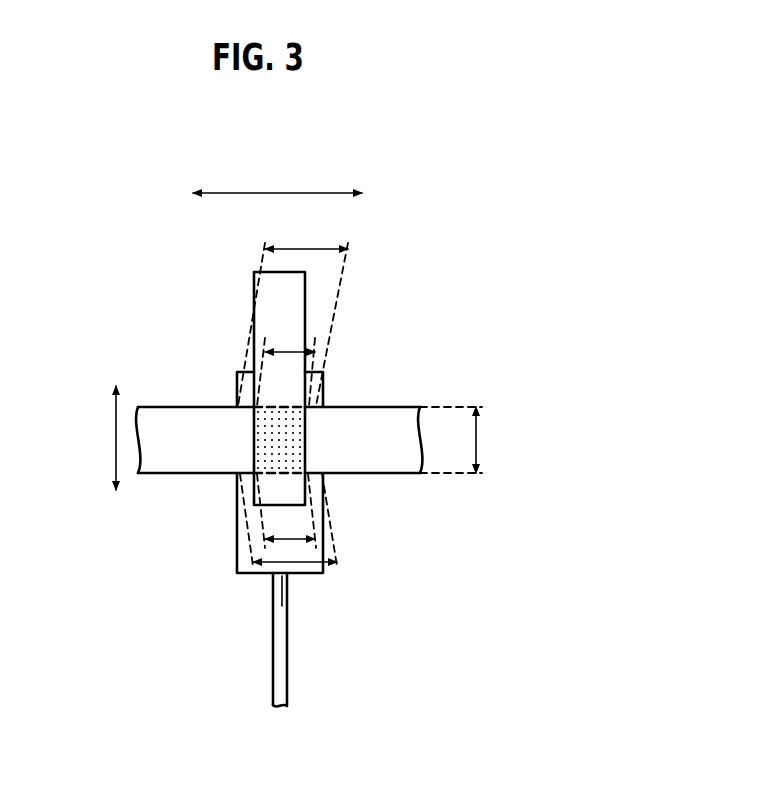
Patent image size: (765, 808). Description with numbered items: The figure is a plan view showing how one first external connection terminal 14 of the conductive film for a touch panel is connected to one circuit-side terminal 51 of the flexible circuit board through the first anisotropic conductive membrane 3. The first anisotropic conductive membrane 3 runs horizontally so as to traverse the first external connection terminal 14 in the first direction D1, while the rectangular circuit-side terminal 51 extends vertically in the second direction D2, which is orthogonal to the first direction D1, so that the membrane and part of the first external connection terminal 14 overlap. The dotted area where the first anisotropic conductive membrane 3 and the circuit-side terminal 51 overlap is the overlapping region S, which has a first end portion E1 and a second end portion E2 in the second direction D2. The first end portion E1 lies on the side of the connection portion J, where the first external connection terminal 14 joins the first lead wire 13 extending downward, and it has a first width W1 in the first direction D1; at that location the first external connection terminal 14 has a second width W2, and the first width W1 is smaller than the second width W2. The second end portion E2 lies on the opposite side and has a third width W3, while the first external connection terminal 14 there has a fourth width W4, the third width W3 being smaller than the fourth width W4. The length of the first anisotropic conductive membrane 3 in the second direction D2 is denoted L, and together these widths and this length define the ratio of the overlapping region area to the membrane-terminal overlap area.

The first anisotropic conductive membrane 3 is at (388, 406).
The circuit-side terminal 51 is at (305, 312).
The first external connection terminal 14 is at (237, 542).
The first lead wire 13 is at (273, 647).
The overlapping region S is at (285, 436).
The connection portion J is at (282, 606).
The first end portion E1 is at (273, 473).
The second end portion E2 is at (276, 407).
The first direction D1 is at (277, 175).
The second direction D2 is at (95, 438).
The length of the first anisotropic conductive membrane L is at (493, 440).
The first width W1 is at (290, 522).
The second width W2 is at (318, 567).
The third width W3 is at (290, 333).
The fourth width W4 is at (329, 247).